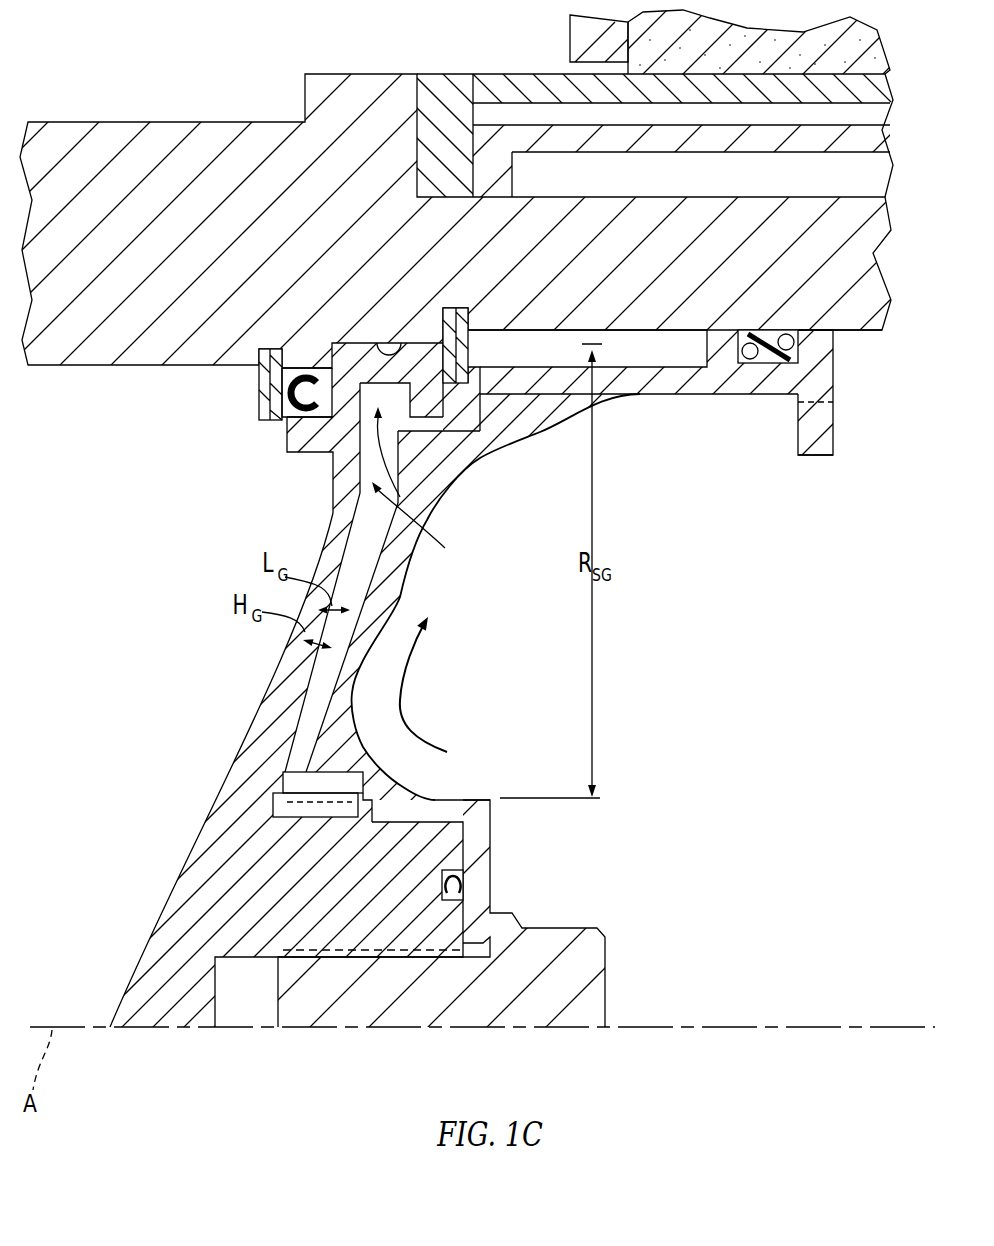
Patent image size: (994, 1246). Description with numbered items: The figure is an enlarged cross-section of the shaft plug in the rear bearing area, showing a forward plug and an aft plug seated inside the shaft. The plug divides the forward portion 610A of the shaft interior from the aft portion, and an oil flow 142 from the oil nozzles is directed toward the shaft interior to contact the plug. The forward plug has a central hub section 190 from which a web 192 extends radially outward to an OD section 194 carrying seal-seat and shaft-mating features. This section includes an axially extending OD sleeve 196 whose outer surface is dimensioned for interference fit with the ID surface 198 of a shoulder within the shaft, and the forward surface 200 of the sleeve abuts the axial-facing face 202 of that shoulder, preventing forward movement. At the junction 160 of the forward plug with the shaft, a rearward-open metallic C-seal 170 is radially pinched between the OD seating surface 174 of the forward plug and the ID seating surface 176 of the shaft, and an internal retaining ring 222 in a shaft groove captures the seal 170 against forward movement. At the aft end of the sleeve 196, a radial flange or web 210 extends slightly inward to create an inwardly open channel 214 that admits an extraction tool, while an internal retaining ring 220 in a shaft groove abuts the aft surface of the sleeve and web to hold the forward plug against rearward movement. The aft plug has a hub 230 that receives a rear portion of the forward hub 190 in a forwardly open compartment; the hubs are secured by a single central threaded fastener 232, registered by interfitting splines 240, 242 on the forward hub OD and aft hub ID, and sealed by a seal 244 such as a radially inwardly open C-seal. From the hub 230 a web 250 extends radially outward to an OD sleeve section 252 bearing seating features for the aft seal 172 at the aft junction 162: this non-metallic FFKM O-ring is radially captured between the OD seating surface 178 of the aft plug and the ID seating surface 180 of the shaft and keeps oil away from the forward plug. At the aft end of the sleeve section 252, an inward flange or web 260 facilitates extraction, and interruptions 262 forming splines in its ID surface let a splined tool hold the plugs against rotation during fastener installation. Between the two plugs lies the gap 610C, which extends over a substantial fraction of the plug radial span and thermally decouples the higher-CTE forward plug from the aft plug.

The oil flow 142 is at (403, 678).
The junction 160 is at (412, 322).
The junction 162 is at (783, 315).
The metallic seal 170 is at (292, 338).
The aft plug seal 172 is at (778, 365).
The OD seating surface 174 is at (283, 417).
The ID seating surface 176 is at (310, 420).
The OD seating surface 178 is at (738, 338).
The ID seating surface 180 is at (805, 333).
The central hub section 190 is at (312, 885).
The web 192 is at (257, 718).
The OD section 194 is at (430, 522).
The OD sleeve 196 is at (390, 370).
The ID surface 198 is at (392, 334).
The forward surface 200 is at (300, 348).
The axial-facing face 202 is at (345, 348).
The web 210 is at (290, 436).
The inwardly-open channel 214 is at (412, 450).
The internal retaining ring 220 is at (458, 337).
The internal retaining ring 222 is at (260, 380).
The hub section 230 is at (445, 790).
The threaded fastener 232 is at (533, 983).
The spline 240 is at (277, 805).
The spline 242 is at (292, 781).
The seal 244 is at (477, 867).
The web 250 is at (383, 589).
The outer diameter sleeve section 252 is at (623, 383).
The radial flange 260 is at (855, 410).
The interruptions 262 is at (833, 447).
The forward portion 610A is at (150, 586).
The gap 610C is at (307, 670).